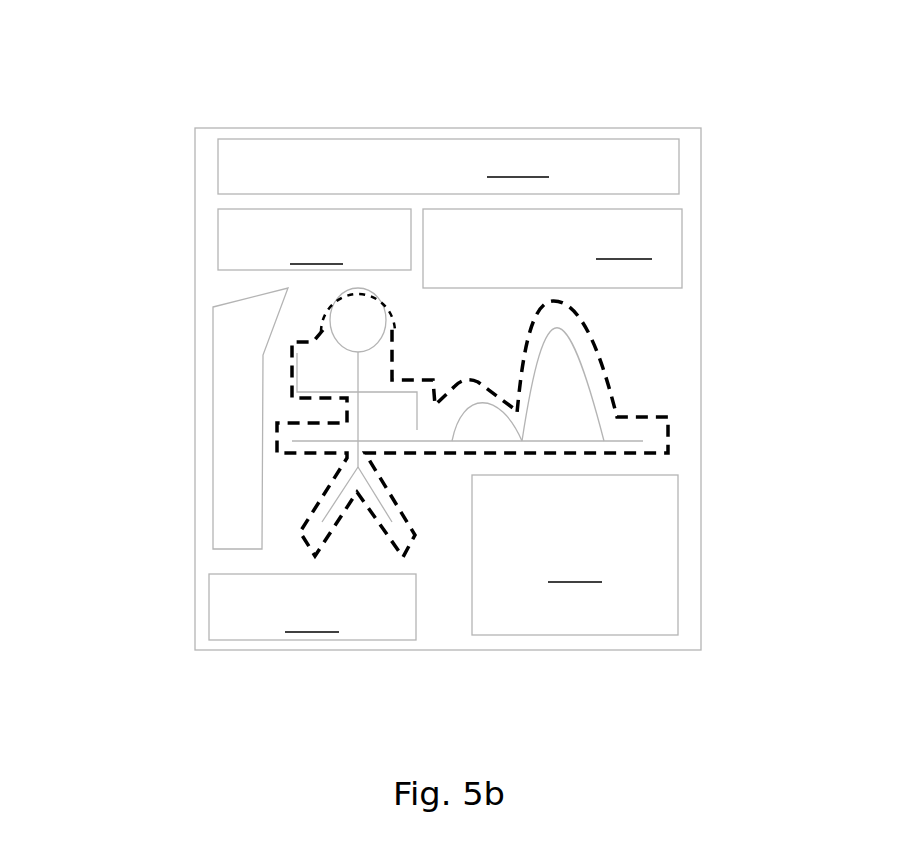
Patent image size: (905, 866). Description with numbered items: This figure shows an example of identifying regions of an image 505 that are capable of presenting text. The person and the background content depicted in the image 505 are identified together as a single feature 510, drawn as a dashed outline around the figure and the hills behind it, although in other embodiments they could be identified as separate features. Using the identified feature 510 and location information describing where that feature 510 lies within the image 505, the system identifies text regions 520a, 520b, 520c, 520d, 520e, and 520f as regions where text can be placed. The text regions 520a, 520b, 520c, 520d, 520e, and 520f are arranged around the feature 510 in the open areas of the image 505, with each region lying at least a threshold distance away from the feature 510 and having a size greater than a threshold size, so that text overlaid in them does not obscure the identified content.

The image 505 is at (242, 128).
The feature 510 is at (640, 405).
The text region 520a is at (448, 166).
The text region 520b is at (314, 239).
The text region 520c is at (552, 248).
The text region 520d is at (575, 555).
The text region 520e is at (312, 607).
The text region 520f is at (218, 305).